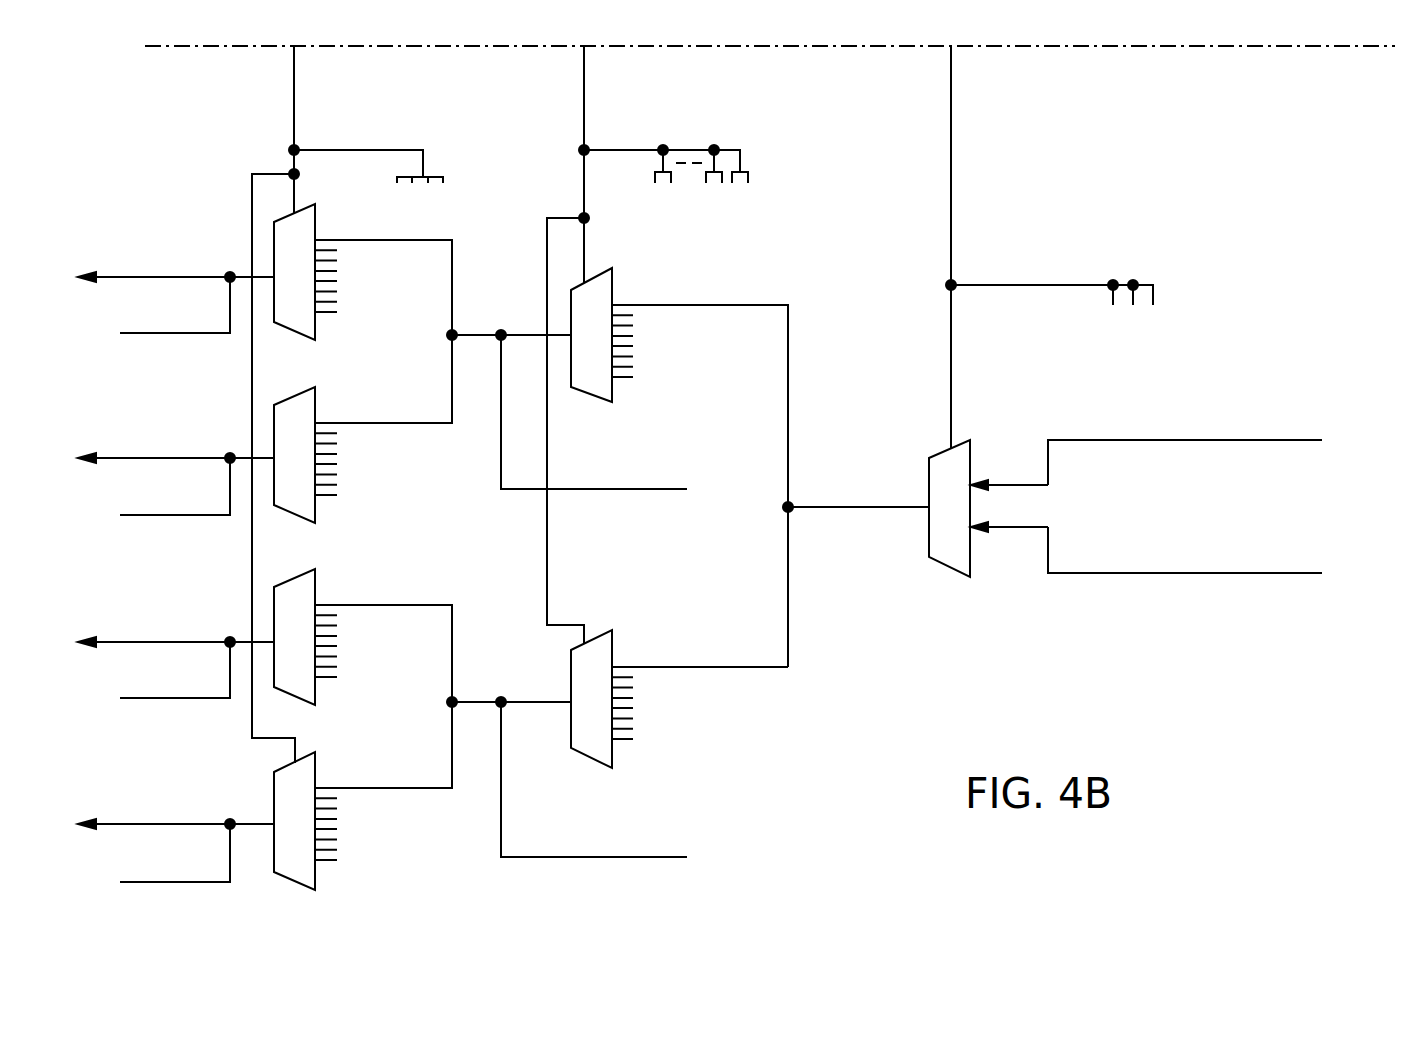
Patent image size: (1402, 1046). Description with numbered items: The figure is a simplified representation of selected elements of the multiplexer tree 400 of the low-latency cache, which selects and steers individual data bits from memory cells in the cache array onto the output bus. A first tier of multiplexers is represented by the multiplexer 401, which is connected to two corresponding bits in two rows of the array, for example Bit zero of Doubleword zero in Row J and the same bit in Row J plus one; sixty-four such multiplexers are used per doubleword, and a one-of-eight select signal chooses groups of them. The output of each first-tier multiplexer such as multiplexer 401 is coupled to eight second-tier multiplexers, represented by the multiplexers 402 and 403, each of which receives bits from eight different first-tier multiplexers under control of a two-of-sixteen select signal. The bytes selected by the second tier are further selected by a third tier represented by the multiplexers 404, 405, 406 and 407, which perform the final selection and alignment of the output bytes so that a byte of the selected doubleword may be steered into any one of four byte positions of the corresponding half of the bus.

The multiplexer tree 400 is at (736, 487).
The multiplexer 401 is at (971, 568).
The multiplexer 402 is at (613, 393).
The multiplexer 403 is at (613, 759).
The multiplexer 404 is at (316, 331).
The multiplexer 405 is at (316, 514).
The multiplexer 406 is at (316, 696).
The multiplexer 407 is at (316, 881).